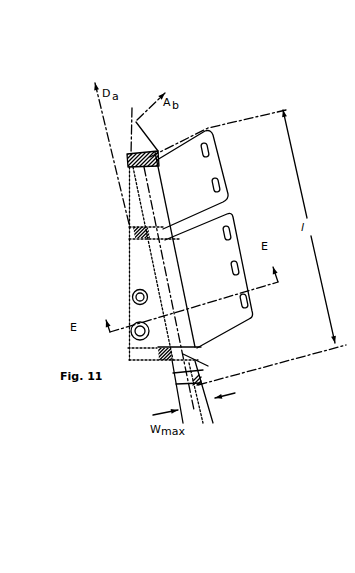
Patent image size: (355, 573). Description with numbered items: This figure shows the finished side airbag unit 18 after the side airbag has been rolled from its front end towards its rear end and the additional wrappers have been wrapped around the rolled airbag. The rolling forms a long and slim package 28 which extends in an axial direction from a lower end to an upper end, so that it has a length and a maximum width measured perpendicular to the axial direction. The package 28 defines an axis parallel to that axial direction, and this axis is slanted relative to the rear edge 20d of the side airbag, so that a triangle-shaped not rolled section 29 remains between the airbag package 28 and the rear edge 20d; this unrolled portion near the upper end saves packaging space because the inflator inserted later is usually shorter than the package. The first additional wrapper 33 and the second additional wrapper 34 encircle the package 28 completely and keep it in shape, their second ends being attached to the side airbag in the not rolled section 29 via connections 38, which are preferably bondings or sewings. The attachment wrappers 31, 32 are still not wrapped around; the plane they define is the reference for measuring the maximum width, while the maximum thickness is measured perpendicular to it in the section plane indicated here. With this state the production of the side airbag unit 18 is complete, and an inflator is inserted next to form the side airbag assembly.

The side airbag unit 18 is at (289, 385).
The rear edge 20d is at (130, 291).
The package 28 is at (130, 278).
The not rolled section 29 is at (131, 258).
The attachment wrapper 31 is at (215, 311).
The attachment wrapper 32 is at (222, 160).
The first additional wrapper 33 is at (128, 213).
The second additional wrapper 34 is at (191, 352).
The connections 38 is at (131, 224).